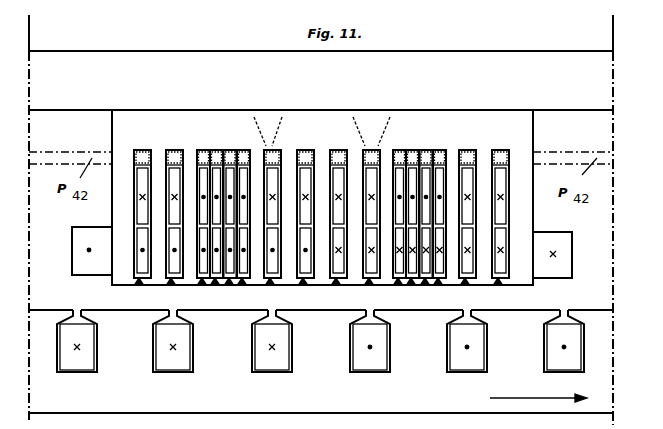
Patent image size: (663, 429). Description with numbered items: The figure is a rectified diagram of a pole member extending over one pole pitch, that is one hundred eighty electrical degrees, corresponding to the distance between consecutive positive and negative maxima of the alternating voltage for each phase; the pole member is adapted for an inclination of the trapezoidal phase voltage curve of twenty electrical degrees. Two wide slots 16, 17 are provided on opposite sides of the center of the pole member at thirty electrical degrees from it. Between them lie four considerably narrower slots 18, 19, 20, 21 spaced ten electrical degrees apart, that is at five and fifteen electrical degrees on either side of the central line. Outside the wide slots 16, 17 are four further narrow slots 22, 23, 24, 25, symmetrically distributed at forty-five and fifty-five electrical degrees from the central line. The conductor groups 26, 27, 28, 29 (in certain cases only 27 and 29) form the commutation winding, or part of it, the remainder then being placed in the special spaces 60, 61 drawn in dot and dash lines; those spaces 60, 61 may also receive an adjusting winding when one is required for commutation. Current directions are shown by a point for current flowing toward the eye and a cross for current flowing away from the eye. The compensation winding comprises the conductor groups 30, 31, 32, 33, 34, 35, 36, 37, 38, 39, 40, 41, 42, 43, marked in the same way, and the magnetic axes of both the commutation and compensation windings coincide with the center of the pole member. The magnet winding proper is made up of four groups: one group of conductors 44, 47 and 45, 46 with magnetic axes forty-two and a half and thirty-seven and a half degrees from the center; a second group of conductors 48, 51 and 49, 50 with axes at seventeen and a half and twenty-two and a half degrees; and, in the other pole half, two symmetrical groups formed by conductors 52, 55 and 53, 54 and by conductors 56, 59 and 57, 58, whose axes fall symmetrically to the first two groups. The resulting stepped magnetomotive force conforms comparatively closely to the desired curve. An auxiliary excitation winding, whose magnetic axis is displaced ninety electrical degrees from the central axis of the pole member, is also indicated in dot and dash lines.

The wide slot 16 is at (223, 150).
The wide slot 17 is at (419, 150).
The valve 18 is at (273, 150).
The valve 19 is at (305, 150).
The valve 20 is at (338, 150).
The valve 21 is at (371, 150).
The narrow slot 22 is at (143, 150).
The narrow slot 23 is at (175, 150).
The narrow slot 24 is at (467, 150).
The narrow slot 25 is at (501, 150).
The conductor group 26 is at (272, 281).
The conductor group 27 is at (305, 281).
The conductor group 28 is at (337, 281).
The conductor group 29 is at (370, 281).
The conductor group 30 is at (93, 275).
The conductor group 31 is at (141, 281).
The conductor group 32 is at (173, 281).
The conductor group 33 is at (203, 281).
The conductor group 34 is at (216, 281).
The conductor group 35 is at (230, 281).
The conductor group 36 is at (243, 281).
The conductor group 37 is at (399, 281).
The conductor group 38 is at (412, 281).
The conductor group 39 is at (426, 281).
The conductor group 40 is at (439, 281).
The conductor group 41 is at (467, 281).
The conductor group 42 is at (500, 281).
The conductor group 43 is at (553, 278).
The conductor group 44 is at (140, 178).
The conductor group 45 is at (172, 178).
The conductor group 46 is at (203, 175).
The conductor group 47 is at (216, 175).
The conductor group 48 is at (229, 175).
The conductor group 49 is at (243, 175).
The conductor group 50 is at (271, 178).
The conductor group 51 is at (306, 178).
The conductor group 52 is at (338, 178).
The conductor group 53 is at (371, 178).
The conductor group 54 is at (399, 175).
The conductor group 55 is at (412, 175).
The conductor group 56 is at (425, 175).
The conductor group 57 is at (439, 175).
The conductor group 58 is at (468, 178).
The conductor group 59 is at (501, 178).
The special space 60 is at (268, 132).
The special space 61 is at (380, 128).